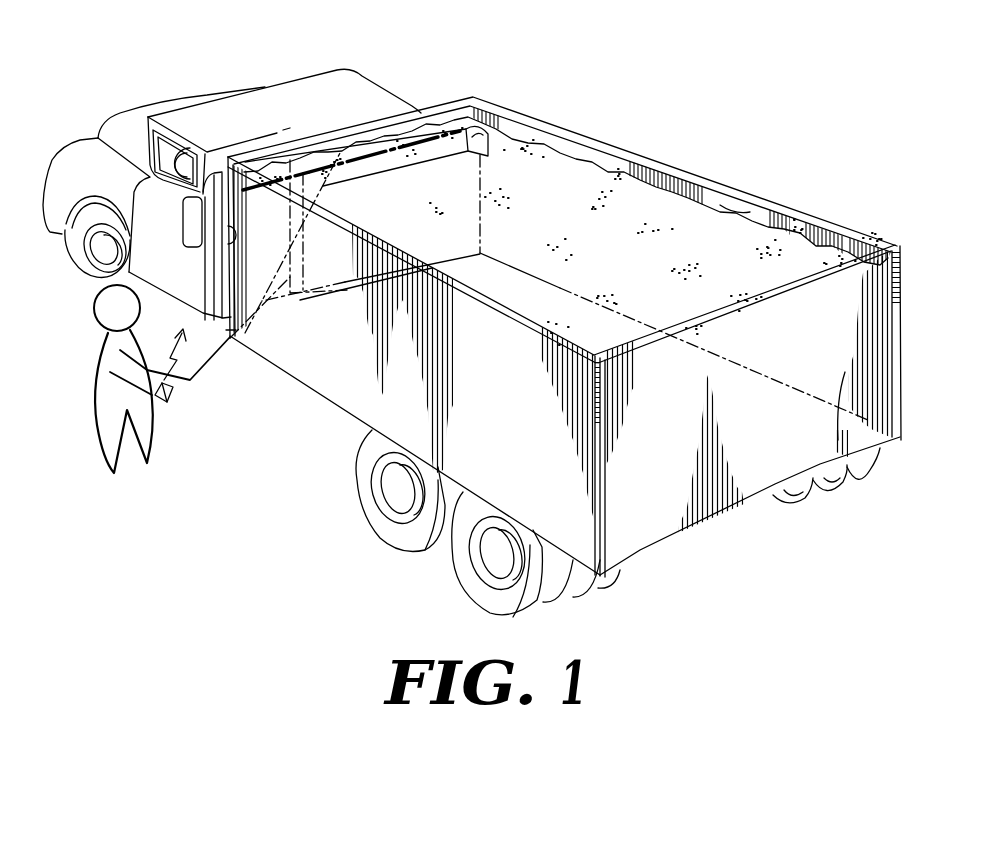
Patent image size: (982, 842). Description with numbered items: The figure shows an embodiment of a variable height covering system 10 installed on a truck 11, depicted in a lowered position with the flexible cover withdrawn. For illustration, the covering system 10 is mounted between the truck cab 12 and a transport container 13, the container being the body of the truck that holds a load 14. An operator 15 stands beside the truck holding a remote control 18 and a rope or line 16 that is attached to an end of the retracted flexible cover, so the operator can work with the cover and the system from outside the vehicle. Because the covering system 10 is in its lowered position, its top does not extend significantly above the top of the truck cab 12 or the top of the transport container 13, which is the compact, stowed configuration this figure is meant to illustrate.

The variable height covering system 10 is at (490, 133).
The truck 11 is at (438, 55).
The truck cab 12 is at (273, 82).
The transport container 13 is at (845, 372).
The load 14 is at (735, 223).
The operator 15 is at (107, 316).
The rope or line 16 is at (230, 338).
The remote control 18 is at (173, 394).